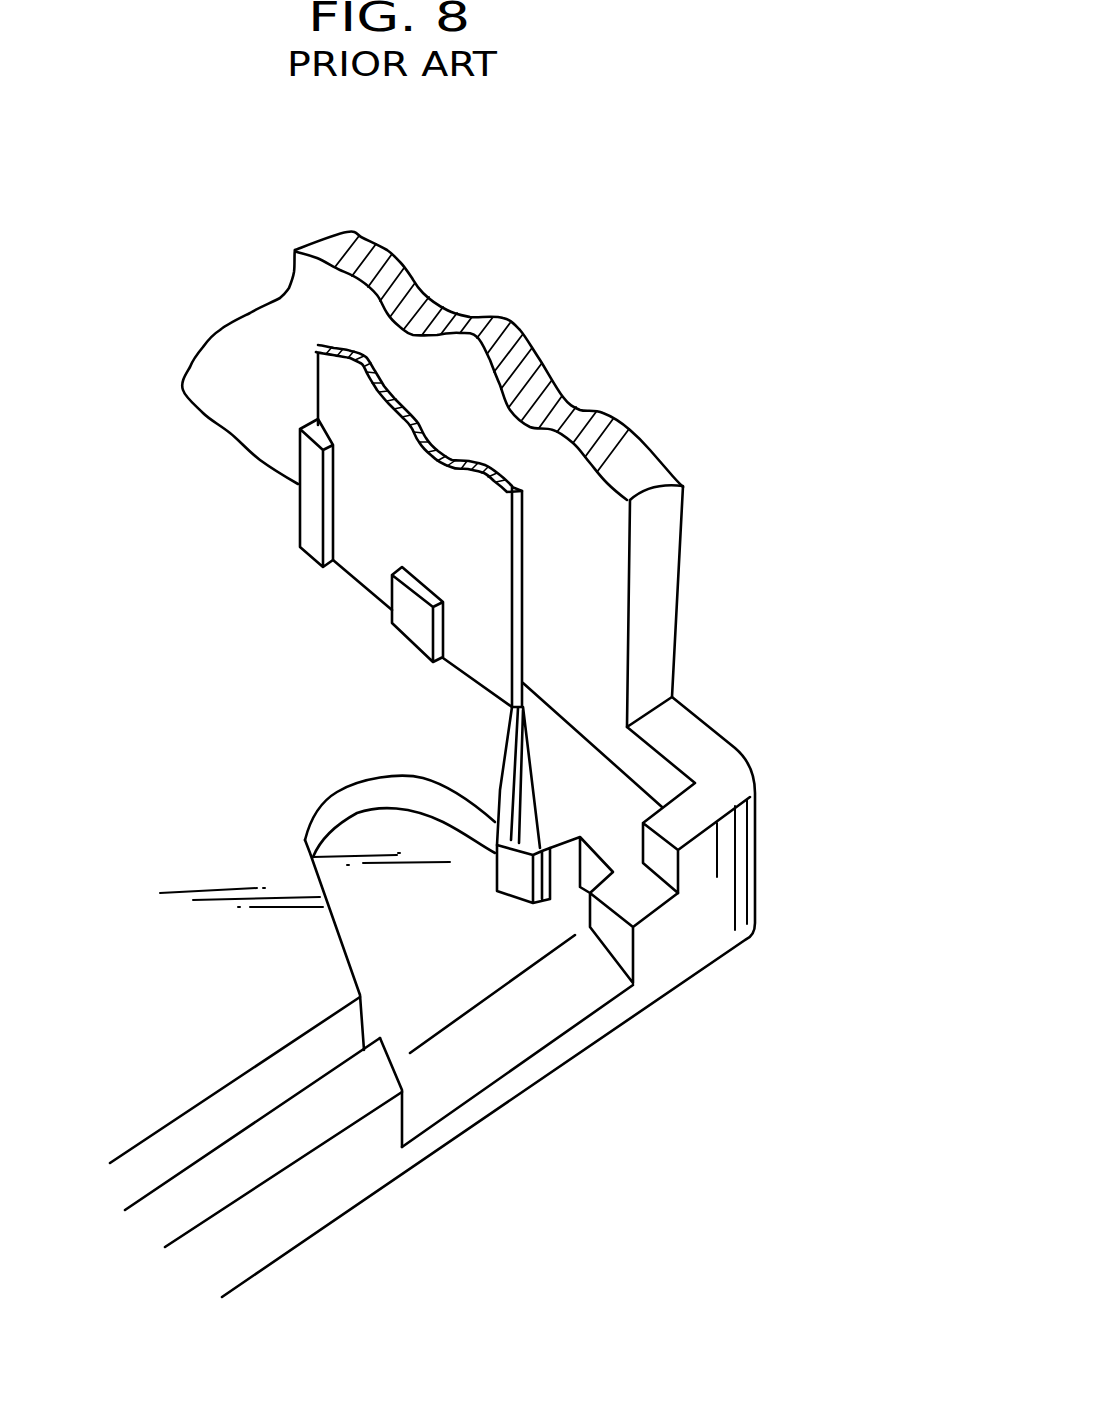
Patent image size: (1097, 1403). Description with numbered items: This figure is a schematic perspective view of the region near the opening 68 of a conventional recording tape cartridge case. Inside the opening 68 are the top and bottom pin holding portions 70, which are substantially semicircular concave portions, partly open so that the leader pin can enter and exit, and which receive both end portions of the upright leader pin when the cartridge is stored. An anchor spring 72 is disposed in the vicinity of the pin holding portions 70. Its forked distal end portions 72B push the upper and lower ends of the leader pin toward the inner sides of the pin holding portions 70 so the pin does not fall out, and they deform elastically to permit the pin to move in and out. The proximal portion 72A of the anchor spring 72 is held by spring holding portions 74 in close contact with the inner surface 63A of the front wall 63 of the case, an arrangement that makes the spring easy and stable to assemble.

The front wall 63 is at (400, 252).
The inner surface 63A is at (585, 653).
The opening 68 is at (505, 1071).
The pin holding portions 70 is at (363, 847).
The anchor spring 72 is at (518, 486).
The proximal portion 72A is at (528, 334).
The distal end portions 72B is at (513, 877).
The spring holding portions 74 is at (420, 622).